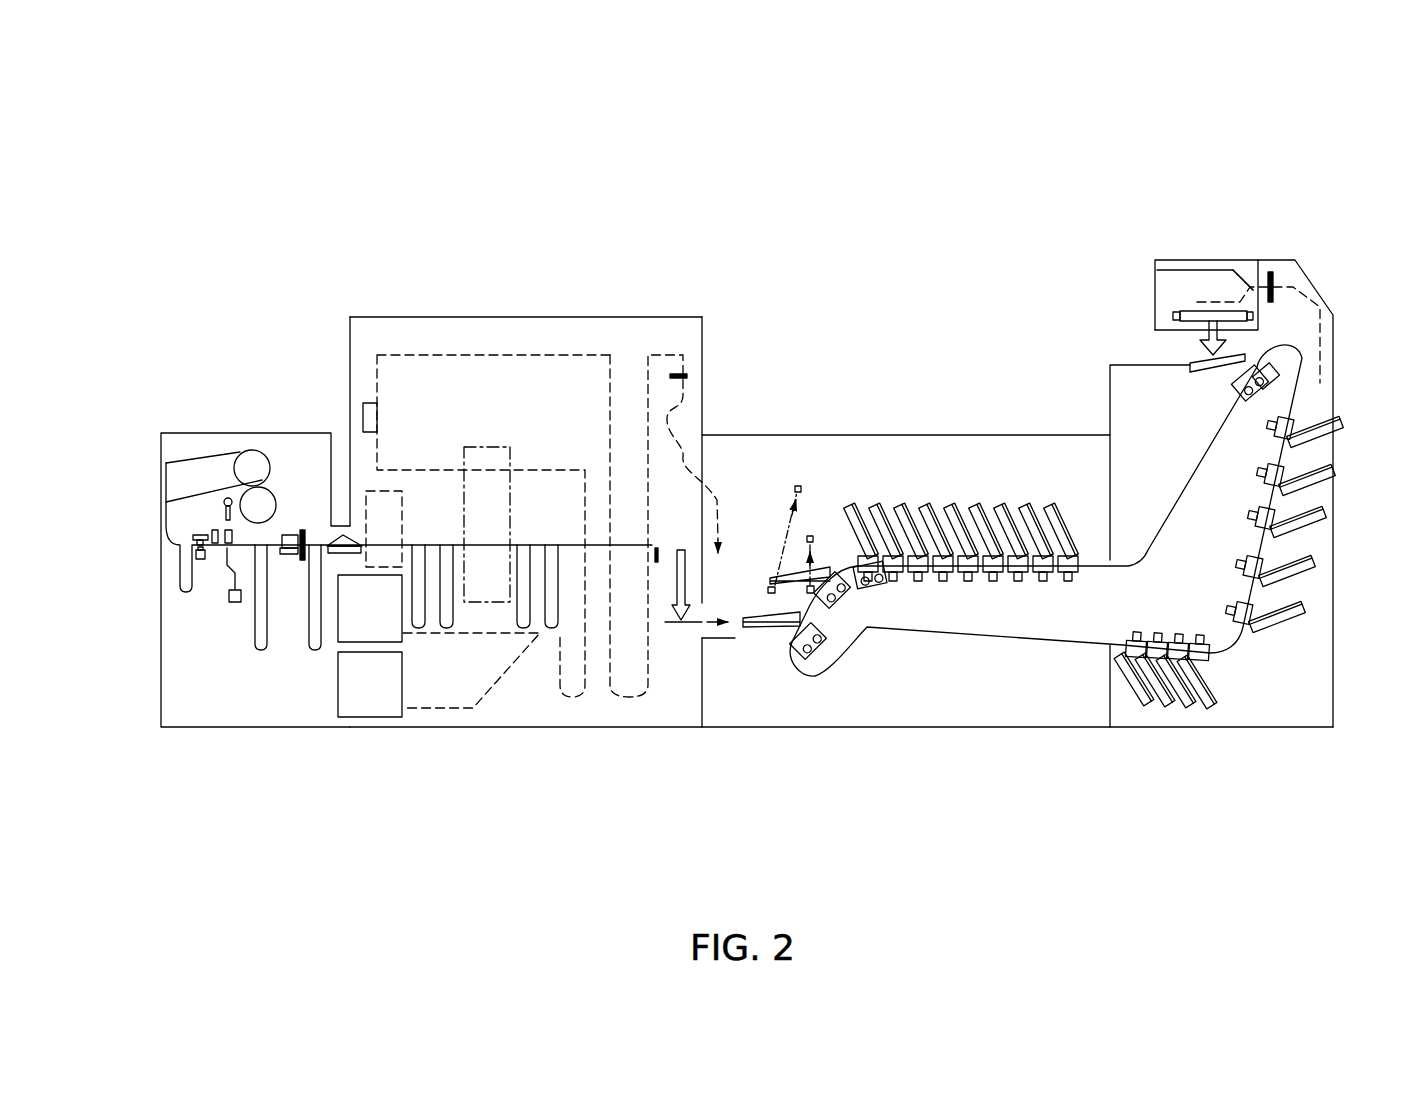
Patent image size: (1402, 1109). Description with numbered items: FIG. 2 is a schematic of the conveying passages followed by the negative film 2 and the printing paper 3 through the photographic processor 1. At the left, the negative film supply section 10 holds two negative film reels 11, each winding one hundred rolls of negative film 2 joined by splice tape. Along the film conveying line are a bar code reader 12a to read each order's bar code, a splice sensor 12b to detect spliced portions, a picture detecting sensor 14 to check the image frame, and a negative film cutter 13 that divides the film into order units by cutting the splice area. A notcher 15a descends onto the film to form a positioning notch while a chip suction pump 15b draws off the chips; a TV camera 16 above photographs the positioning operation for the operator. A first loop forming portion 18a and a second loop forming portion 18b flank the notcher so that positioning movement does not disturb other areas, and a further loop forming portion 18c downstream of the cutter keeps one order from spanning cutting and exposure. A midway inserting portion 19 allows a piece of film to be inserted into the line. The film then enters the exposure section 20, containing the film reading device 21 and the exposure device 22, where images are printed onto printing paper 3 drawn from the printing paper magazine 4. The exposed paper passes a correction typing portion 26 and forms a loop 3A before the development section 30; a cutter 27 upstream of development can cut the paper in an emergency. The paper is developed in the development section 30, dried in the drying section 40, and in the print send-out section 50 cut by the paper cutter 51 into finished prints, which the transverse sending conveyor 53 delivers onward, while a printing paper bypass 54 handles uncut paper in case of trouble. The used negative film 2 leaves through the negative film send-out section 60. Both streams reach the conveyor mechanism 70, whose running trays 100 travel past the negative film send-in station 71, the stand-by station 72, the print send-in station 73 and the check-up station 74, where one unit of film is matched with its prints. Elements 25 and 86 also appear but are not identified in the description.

The photographic processor 1 is at (686, 235).
The negative film 2 is at (545, 545).
The printing paper 3 is at (677, 355).
The loop 3A is at (617, 702).
The printing paper magazine 4 is at (395, 680).
The negative film supply section 10 is at (211, 412).
The negative film reels 11 is at (266, 503).
The bar code reader 12a is at (207, 537).
The splice sensor 12b is at (283, 535).
The negative film cutter 13 is at (289, 585).
The picture detecting sensor 14 is at (203, 563).
The notcher 15a is at (233, 534).
The chip suction pump 15b is at (237, 603).
The TV camera 16 is at (228, 496).
The first loop forming portion 18a is at (186, 593).
The second loop forming portion 18b is at (264, 660).
The loop forming portion 18c is at (313, 660).
The midway inserting portion 19 is at (364, 535).
The exposure section 20 is at (474, 376).
The film reading device 21 is at (390, 490).
The exposure device 22 is at (485, 446).
The discharge sensor 25 is at (657, 548).
The correction typing portion 26 is at (366, 404).
The cutter 27 is at (687, 378).
The development section 30 is at (982, 440).
The drying section 40 is at (1127, 397).
The print send-out section 50 is at (1202, 282).
The paper cutter 51 is at (1270, 270).
The transverse sending conveyor 53 is at (1181, 313).
The printing paper bypass 54 is at (1200, 270).
The negative film send-out section 60 is at (713, 610).
The conveyor mechanism 70 is at (992, 656).
The negative film send-in station 71 is at (741, 650).
The stand-by station 72 is at (1164, 722).
The print send-in station 73 is at (1160, 354).
The check-up station 74 is at (893, 503).
The carrier at belt top 86 is at (1280, 379).
The running trays 100 is at (758, 642).